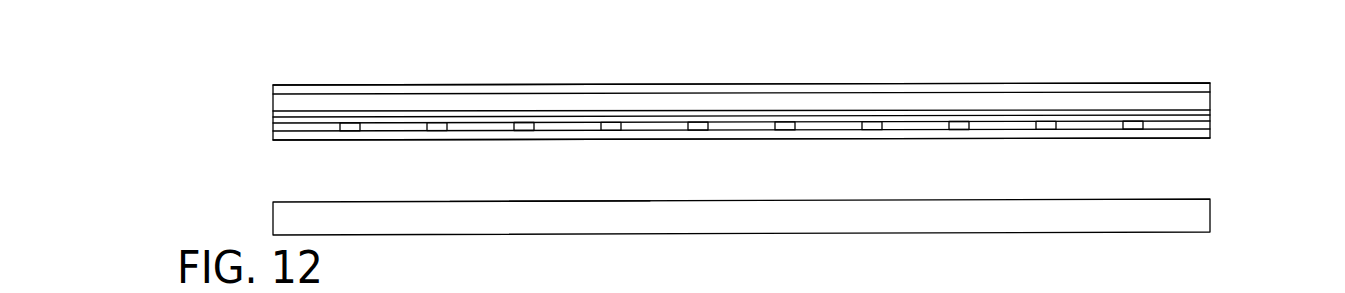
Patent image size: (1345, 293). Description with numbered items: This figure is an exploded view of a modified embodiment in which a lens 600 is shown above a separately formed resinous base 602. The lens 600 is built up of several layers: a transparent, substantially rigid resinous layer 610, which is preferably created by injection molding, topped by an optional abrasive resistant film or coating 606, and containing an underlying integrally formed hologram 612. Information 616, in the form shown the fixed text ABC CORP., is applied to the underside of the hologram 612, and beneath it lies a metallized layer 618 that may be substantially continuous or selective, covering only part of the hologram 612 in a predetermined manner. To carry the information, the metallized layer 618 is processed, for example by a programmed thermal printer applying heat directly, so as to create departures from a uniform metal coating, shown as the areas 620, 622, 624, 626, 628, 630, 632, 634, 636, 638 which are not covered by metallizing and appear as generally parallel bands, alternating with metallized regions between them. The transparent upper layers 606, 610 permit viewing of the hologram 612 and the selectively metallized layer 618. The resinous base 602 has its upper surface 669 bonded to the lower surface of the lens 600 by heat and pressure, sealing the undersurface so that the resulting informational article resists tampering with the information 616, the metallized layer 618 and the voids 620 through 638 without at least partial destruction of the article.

The lens 600 is at (262, 102).
The resinous base 602 is at (262, 200).
The abrasive resistant film or coating 606 is at (312, 84).
The resinous layer 610 is at (1197, 98).
The hologram 612 is at (1200, 116).
The information 616 is at (1180, 129).
The metallized layer 618 is at (1070, 138).
The area not covered by metallizing 620 is at (350, 122).
The area not covered by metallizing 622 is at (437, 122).
The area not covered by metallizing 624 is at (524, 122).
The area not covered by metallizing 626 is at (611, 121).
The area not covered by metallizing 628 is at (698, 121).
The area not covered by metallizing 630 is at (785, 121).
The area not covered by metallizing 632 is at (872, 121).
The area not covered by metallizing 634 is at (959, 120).
The area not covered by metallizing 636 is at (1046, 120).
The area not covered by metallizing 638 is at (1133, 120).
The upper surface 669 is at (540, 201).